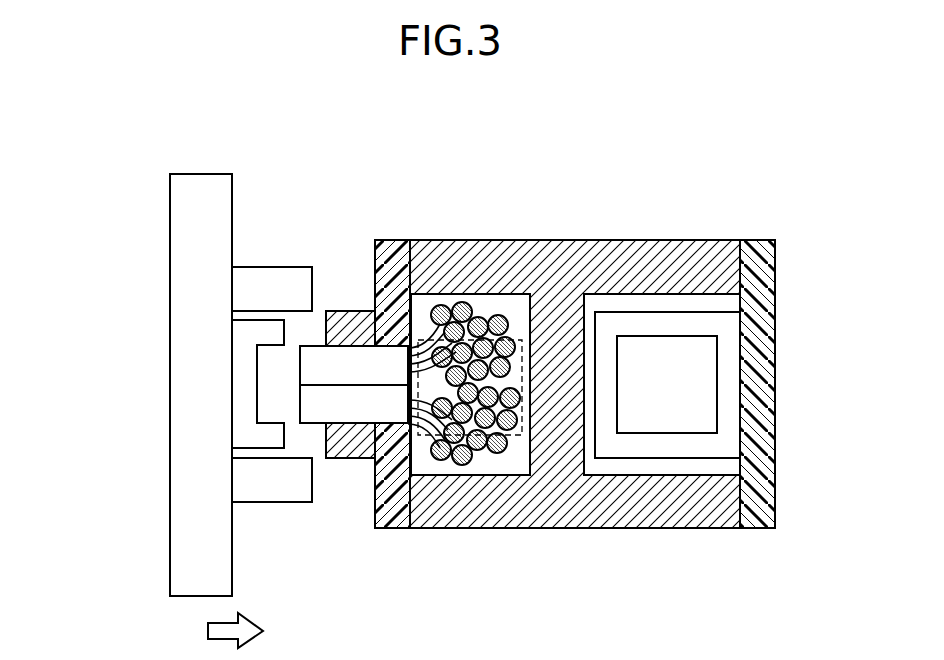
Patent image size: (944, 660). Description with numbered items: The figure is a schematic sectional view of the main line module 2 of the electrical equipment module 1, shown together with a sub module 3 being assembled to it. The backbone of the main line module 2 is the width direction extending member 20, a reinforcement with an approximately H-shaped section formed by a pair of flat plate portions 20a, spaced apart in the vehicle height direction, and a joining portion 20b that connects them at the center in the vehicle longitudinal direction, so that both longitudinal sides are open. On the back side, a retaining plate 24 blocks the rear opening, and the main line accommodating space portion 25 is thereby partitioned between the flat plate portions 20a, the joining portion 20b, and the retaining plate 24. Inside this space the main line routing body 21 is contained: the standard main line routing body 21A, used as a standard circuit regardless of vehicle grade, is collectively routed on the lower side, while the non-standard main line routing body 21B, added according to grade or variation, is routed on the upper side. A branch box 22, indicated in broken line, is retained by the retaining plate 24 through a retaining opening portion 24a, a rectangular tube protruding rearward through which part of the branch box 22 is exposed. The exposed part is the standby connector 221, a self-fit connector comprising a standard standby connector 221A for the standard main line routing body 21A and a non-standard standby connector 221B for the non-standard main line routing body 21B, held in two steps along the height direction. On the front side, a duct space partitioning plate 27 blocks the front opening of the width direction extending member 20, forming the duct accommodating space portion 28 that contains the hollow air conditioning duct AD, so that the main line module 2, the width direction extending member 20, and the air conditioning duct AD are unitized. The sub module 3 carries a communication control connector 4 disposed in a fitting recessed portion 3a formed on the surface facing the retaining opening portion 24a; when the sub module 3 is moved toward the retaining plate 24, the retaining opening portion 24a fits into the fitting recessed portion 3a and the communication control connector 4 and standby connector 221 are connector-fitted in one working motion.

The electrical equipment module 1 is at (270, 159).
The main line module 2 is at (603, 580).
The sub module 3 is at (152, 329).
The fitting recessed portion 3a is at (278, 460).
The communication control connector 4 is at (270, 332).
The width direction extending member 20 is at (676, 227).
The flat plate portion 20a is at (613, 260).
The joining portion 20b is at (562, 348).
The main line routing body 21 is at (475, 384).
The standard main line routing body 21A is at (441, 462).
The non-standard main line routing body 21B is at (442, 305).
The branch box 22 is at (520, 435).
The retaining plate 24 is at (396, 541).
The retaining opening portion 24a is at (346, 457).
The main line accommodating space portion 25 is at (502, 288).
The duct space partitioning plate 27 is at (786, 412).
The duct accommodating space portion 28 is at (650, 427).
The standby connector 221 is at (347, 397).
The standard standby connector 221A is at (362, 410).
The non-standard standby connector 221B is at (352, 357).
The air conditioning duct AD is at (734, 363).